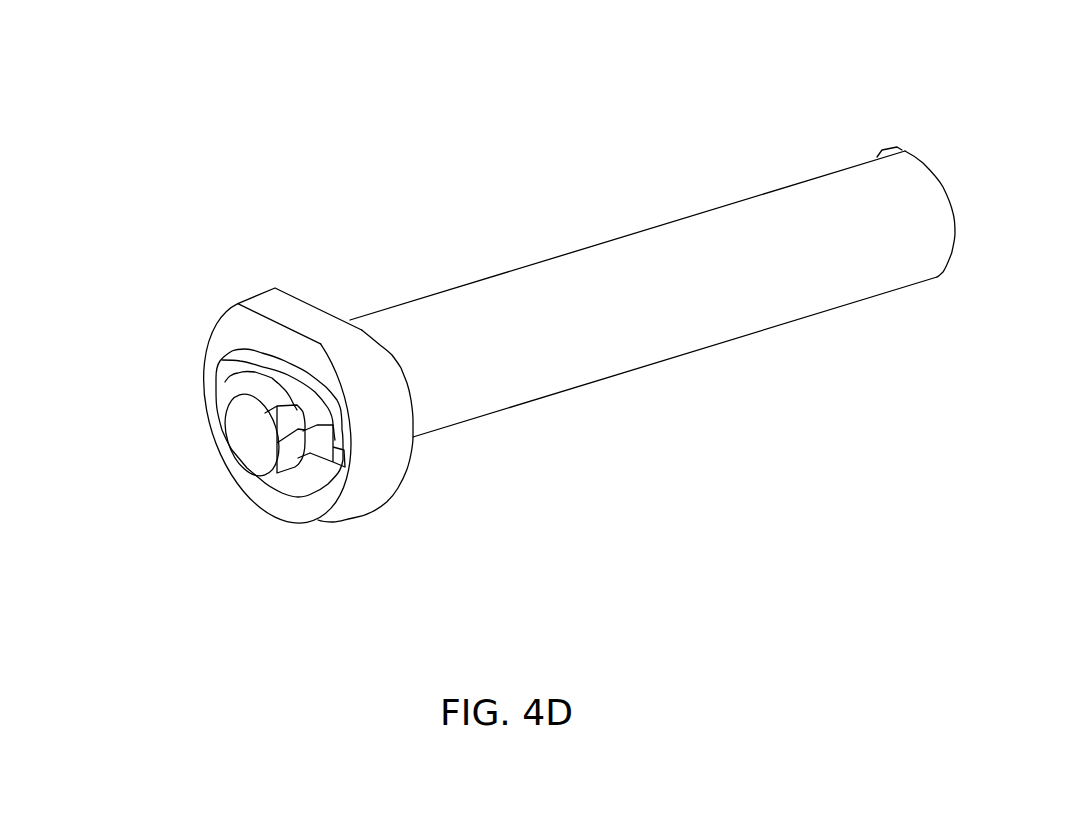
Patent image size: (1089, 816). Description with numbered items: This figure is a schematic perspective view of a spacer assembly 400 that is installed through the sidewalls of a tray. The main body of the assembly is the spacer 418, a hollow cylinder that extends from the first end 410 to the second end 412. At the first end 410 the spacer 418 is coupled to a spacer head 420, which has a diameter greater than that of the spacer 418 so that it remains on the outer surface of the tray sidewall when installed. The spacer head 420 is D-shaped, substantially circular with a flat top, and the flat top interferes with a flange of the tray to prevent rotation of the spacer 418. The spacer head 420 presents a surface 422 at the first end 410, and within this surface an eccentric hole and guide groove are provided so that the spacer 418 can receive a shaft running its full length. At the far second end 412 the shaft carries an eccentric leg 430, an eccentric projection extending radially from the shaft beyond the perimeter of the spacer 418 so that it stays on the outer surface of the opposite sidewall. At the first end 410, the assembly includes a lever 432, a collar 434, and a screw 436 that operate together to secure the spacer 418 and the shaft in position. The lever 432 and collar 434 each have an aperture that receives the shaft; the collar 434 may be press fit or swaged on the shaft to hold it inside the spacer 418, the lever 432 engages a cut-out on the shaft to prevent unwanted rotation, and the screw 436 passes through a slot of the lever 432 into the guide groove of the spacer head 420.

The spacer assembly 400 is at (284, 141).
The first end 410 is at (235, 337).
The second end 412 is at (953, 247).
The spacer 418 is at (657, 338).
The spacer head 420 is at (402, 457).
The surface 422 is at (290, 340).
The eccentric leg 430 is at (880, 157).
The lever 432 is at (323, 473).
The collar 434 is at (223, 393).
The screw 436 is at (247, 461).